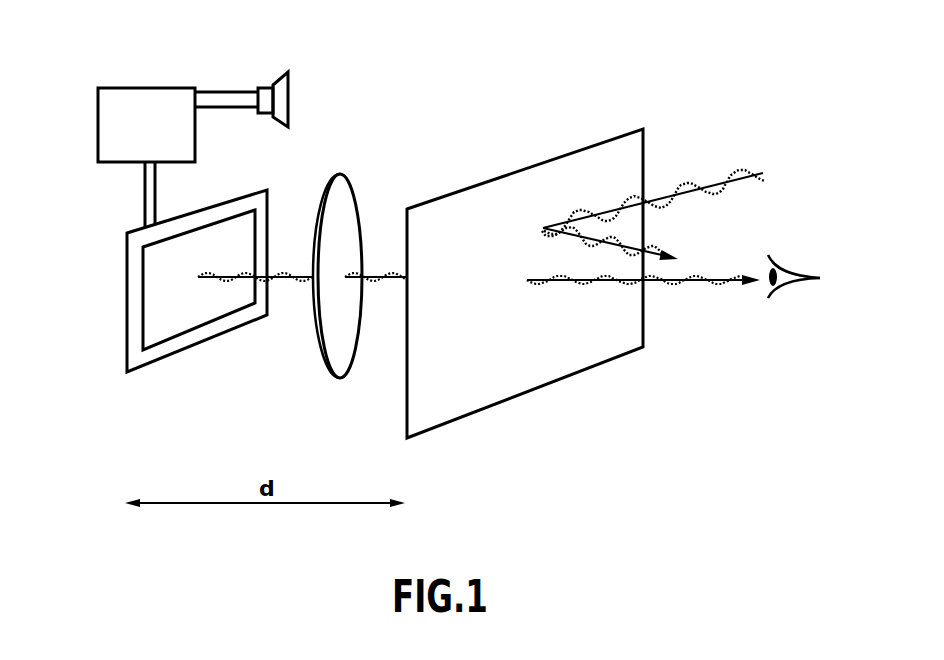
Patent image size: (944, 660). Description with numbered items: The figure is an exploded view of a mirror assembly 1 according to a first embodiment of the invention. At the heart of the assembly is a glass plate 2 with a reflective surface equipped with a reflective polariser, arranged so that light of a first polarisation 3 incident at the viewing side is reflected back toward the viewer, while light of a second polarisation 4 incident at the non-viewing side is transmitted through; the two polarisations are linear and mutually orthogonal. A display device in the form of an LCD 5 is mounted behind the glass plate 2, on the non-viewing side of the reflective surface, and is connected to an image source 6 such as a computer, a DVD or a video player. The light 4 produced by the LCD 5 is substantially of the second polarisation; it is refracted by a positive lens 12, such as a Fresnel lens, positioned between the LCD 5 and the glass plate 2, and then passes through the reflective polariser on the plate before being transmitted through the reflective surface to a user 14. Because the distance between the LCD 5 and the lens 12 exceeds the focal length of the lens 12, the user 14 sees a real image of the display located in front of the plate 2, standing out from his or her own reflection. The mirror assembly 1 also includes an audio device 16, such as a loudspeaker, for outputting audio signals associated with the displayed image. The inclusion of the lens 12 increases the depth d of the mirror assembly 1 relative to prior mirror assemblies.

The mirror assembly 1 is at (742, 65).
The glass plate 2 is at (507, 183).
The light of a first polarisation 3 is at (747, 173).
The light of a second polarisation 4 is at (718, 284).
The LCD 5 is at (130, 265).
The image source 6 is at (98, 125).
The positive lens 12 is at (340, 180).
The user 14 is at (781, 288).
The audio device 16 is at (267, 92).